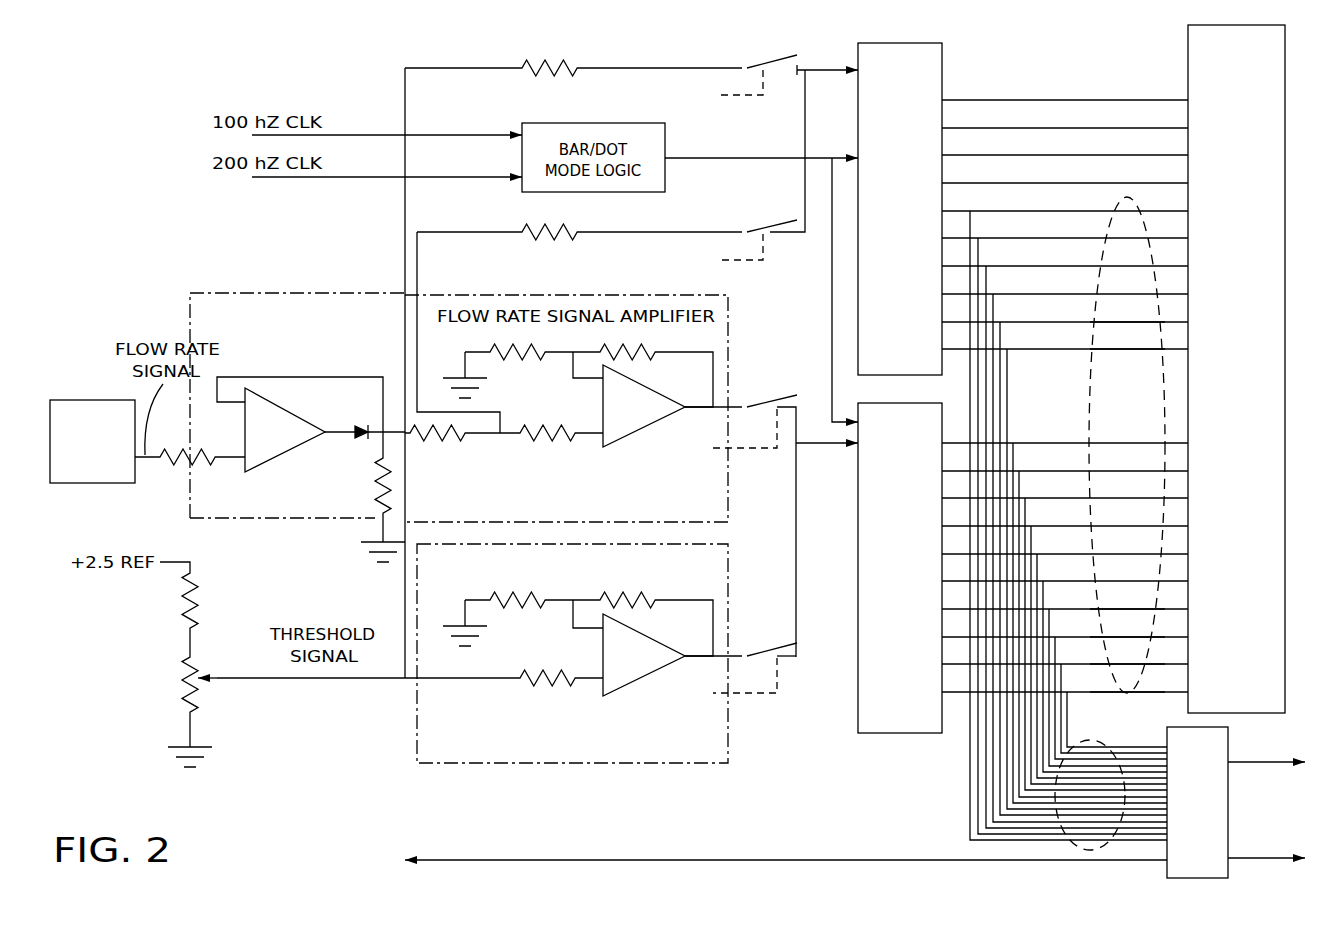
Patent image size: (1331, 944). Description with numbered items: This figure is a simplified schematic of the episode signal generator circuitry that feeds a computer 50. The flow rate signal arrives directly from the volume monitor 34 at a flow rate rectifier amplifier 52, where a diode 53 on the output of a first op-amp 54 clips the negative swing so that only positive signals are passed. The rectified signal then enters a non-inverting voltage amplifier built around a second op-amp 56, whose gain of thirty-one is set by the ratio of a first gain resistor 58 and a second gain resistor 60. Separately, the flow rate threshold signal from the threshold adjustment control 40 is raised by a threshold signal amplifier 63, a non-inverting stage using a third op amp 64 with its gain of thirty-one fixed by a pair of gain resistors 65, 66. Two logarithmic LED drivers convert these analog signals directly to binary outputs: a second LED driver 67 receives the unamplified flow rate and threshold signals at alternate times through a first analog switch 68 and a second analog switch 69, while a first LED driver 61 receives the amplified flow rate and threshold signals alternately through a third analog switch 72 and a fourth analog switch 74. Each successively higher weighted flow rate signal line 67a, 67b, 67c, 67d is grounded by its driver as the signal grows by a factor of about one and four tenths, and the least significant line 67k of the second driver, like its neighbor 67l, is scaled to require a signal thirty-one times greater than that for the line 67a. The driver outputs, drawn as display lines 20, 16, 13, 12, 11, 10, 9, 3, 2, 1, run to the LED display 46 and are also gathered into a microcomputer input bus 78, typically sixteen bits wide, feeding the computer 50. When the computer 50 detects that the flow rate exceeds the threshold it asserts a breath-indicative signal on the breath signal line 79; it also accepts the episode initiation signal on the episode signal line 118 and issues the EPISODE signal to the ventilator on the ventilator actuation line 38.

The volume monitor 34 is at (99, 472).
The flow rate rectifier amplifier 52 is at (282, 341).
The diode 53 is at (355, 438).
The first op-amp 54 is at (290, 413).
The second op-amp 56 is at (636, 385).
The first gain resistor 58 is at (640, 349).
The second gain resistor 60 is at (545, 358).
The threshold signal amplifier 63 is at (479, 757).
The third op amp 64 is at (641, 671).
The gain resistor 65 is at (640, 600).
The gain resistor 66 is at (540, 606).
The second LED driver 67 is at (887, 357).
The first LED driver 61 is at (887, 707).
The first analog switch 68 is at (768, 64).
The second analog switch 69 is at (768, 228).
The third analog switch 72 is at (760, 397).
The fourth analog switch 74 is at (760, 645).
The threshold adjustment control 40 is at (198, 653).
The LED display 46 is at (1238, 693).
The computer 50 is at (1206, 860).
The microcomputer input bus 78 is at (1068, 746).
The ventilator actuation line 38 is at (1238, 764).
The breath signal line 79 is at (1245, 862).
The episode signal line 118 is at (810, 857).
The LED line 20 is at (1065, 91).
The LED line 16 is at (1065, 516).
The LED line 13 is at (1065, 549).
The LED line 12 is at (1065, 559).
The LED line 11 is at (1065, 570).
The LED line 10 is at (1065, 614).
The LED line 9 is at (1065, 625).
The LED line 3 is at (1065, 689).
The LED line 2 is at (1065, 699).
The LED line 1 is at (1065, 710).
The least significant weighted flow rate signal line 67a is at (1127, 683).
The weighted flow rate signal line 67b is at (1127, 655).
The weighted flow rate signal line 67c is at (1127, 628).
The LED line 67d is at (1127, 600).
The least significant weighted flow rate signal line of second LED driver 67k is at (1127, 343).
The LED line 67l is at (1127, 316).